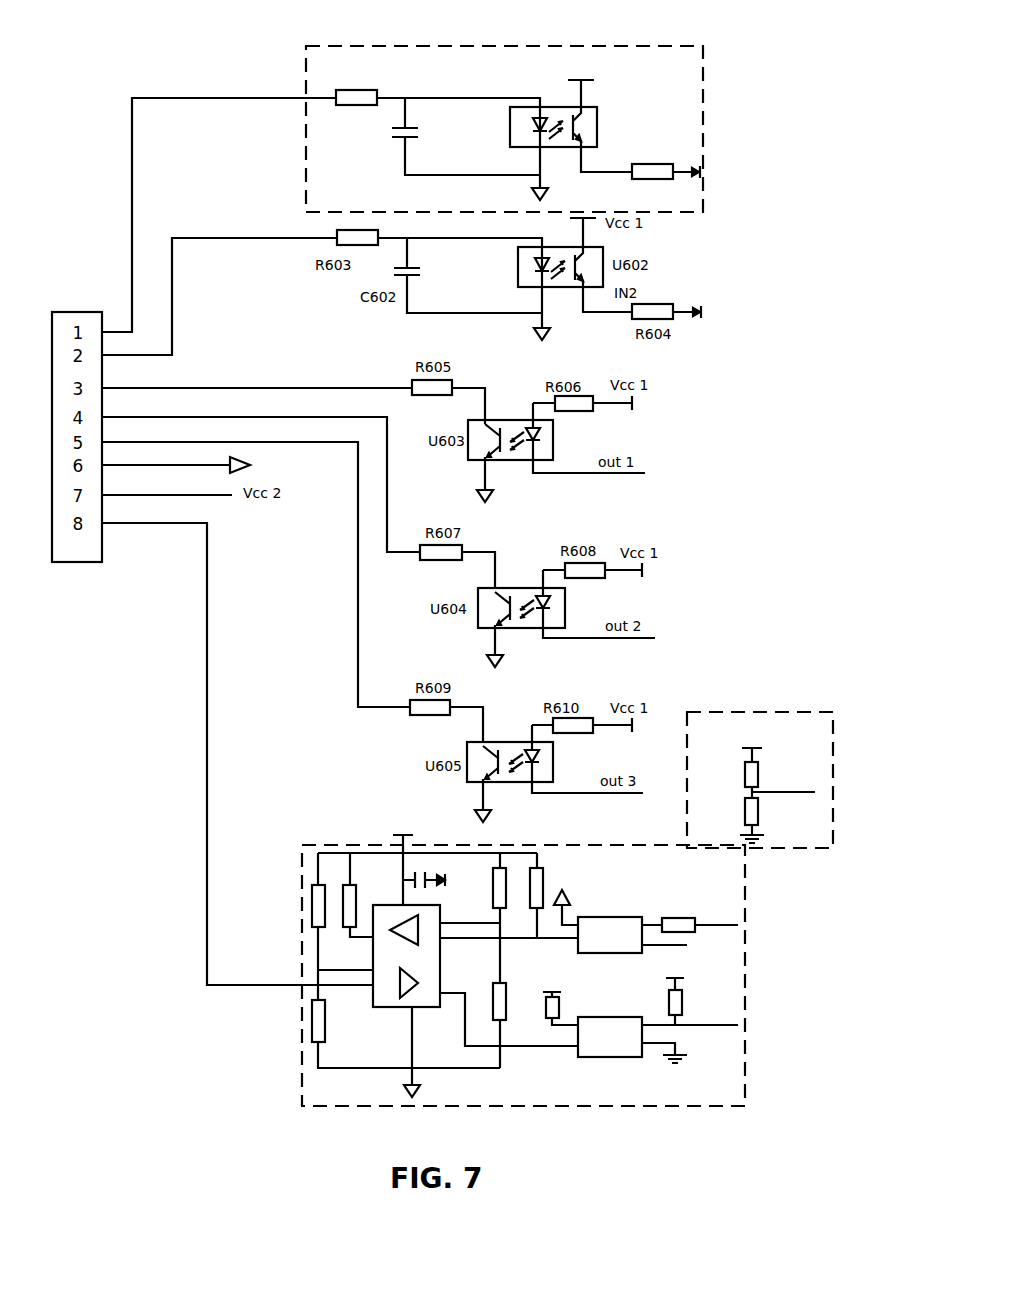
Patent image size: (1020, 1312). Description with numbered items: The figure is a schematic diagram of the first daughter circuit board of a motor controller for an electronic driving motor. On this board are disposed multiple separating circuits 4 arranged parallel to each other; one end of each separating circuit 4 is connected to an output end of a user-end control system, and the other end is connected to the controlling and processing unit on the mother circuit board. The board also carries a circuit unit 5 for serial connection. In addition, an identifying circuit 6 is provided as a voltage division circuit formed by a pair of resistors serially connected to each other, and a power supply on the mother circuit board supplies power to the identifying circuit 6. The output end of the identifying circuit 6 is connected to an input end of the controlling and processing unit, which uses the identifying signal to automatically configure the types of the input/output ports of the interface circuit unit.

The separating circuit 4 is at (313, 75).
The circuit unit for serial connection 5 is at (325, 1090).
The identifying circuit 6 is at (823, 718).